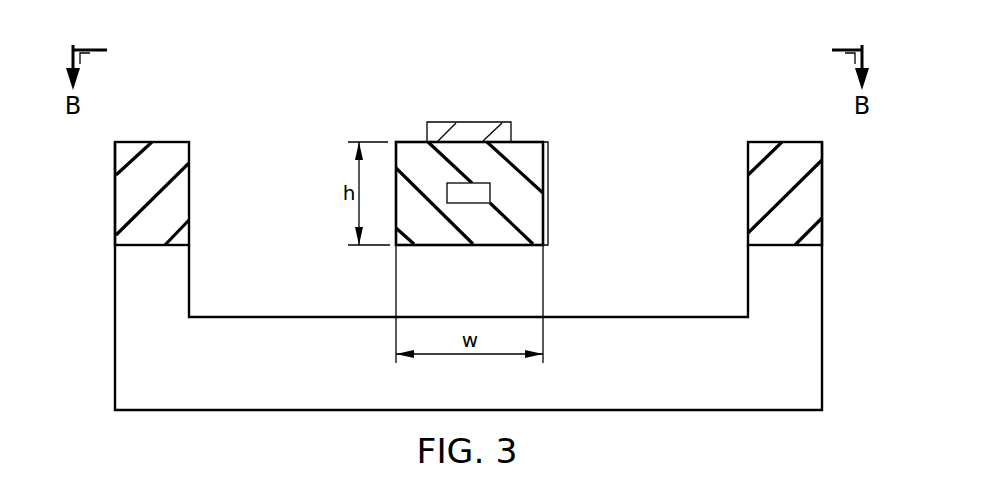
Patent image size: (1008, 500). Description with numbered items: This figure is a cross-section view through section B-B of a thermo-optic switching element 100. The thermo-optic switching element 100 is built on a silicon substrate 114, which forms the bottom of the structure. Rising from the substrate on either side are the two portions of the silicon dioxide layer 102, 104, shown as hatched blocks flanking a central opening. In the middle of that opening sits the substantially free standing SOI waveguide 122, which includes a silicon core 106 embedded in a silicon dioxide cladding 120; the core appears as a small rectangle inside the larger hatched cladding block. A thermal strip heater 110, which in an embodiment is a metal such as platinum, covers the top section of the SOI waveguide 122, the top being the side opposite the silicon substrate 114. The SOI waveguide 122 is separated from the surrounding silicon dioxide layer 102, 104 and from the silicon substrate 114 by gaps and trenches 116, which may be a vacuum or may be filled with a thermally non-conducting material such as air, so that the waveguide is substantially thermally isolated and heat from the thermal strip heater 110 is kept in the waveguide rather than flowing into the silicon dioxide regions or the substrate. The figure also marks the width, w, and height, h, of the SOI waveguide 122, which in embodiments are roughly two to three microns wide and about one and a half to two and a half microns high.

The thermo-optic switching element 100 is at (359, 64).
The silicon dioxide layer 102 is at (122, 192).
The silicon dioxide layer 104 is at (817, 193).
The silicon core 106 is at (468, 203).
The thermal strip heater 110 is at (466, 130).
The silicon substrate 114 is at (485, 398).
The gaps and trenches 116 is at (637, 135).
The silicon dioxide cladding 120 is at (490, 237).
The SOI waveguide 122 is at (556, 142).